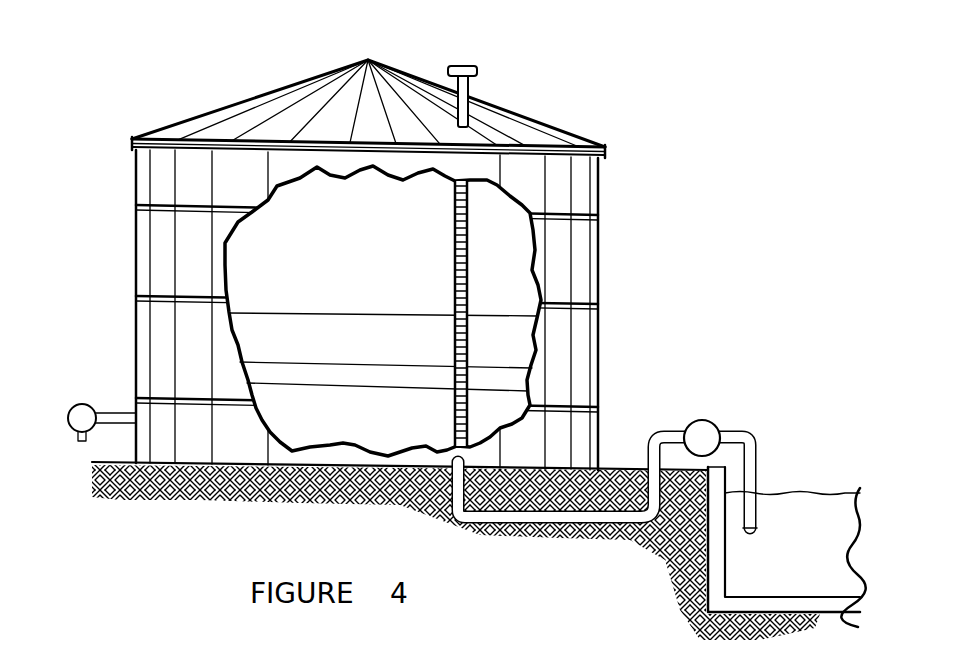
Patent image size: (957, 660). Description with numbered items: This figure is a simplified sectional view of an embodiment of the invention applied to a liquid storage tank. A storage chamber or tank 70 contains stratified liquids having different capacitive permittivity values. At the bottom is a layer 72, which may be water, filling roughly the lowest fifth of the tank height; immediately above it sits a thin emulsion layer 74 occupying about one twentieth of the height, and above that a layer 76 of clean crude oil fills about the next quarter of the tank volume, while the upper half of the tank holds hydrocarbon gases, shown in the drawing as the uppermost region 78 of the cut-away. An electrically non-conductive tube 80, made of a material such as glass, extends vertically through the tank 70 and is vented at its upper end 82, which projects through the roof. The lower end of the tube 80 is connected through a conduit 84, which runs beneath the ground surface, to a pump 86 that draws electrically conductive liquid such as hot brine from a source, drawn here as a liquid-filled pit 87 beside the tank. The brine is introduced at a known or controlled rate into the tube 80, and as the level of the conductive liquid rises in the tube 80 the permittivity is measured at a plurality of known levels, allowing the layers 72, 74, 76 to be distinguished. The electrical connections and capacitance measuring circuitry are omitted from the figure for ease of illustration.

The storage tank 70 is at (598, 190).
The bottom layer 72 is at (341, 427).
The emulsion layer 74 is at (377, 376).
The layer of clean crude oil 76 is at (354, 354).
The upper layer 78 is at (355, 281).
The electrically non-conductive tube 80 is at (468, 275).
The upper end 82 is at (460, 66).
The conduit 84 is at (662, 430).
The pump 86 is at (700, 419).
The pit 87 is at (801, 564).